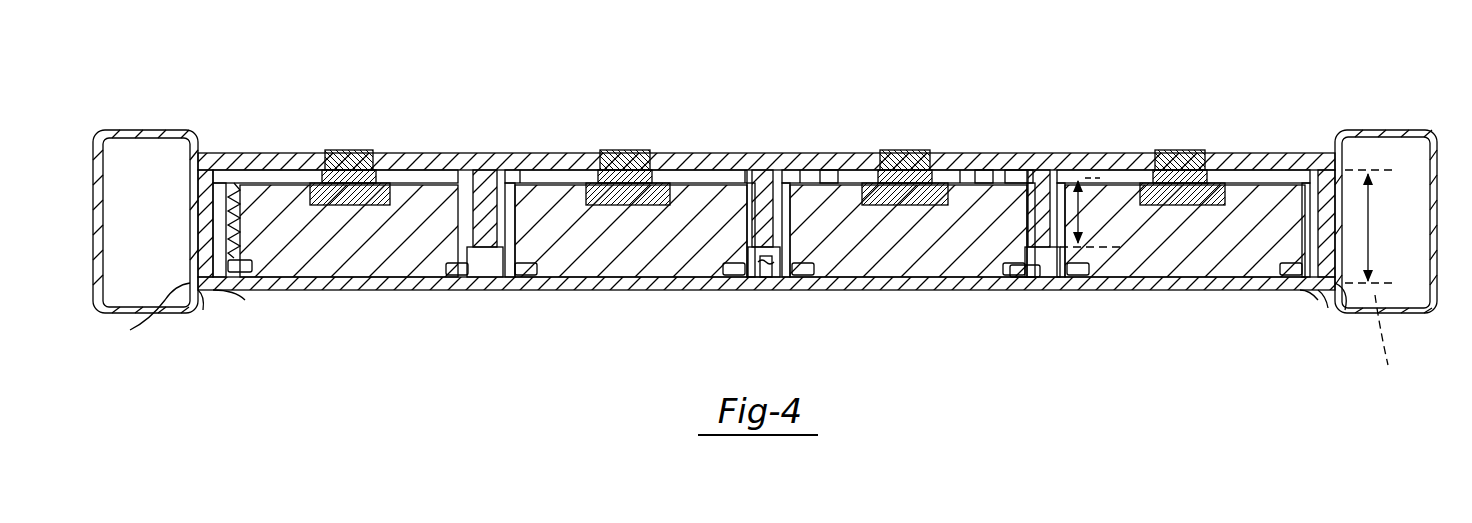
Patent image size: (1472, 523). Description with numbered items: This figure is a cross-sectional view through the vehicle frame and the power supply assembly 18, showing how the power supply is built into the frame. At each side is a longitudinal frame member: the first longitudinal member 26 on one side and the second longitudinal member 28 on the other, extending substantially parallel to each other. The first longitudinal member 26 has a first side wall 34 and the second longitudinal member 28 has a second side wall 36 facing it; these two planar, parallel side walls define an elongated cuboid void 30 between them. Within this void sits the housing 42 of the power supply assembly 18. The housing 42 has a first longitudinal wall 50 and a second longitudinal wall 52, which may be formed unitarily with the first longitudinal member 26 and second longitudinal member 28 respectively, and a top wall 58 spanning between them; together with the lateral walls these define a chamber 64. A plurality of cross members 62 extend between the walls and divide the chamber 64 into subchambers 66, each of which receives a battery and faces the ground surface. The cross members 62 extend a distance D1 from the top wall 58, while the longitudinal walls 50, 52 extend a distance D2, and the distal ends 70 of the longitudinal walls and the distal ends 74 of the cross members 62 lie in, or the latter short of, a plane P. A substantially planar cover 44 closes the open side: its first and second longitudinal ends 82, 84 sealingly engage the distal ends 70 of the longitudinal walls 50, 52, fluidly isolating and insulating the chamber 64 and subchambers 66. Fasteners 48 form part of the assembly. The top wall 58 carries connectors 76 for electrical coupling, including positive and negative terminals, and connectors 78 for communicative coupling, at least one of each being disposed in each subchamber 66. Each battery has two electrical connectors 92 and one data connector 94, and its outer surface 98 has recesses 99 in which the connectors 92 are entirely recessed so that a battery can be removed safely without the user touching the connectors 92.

The power supply assembly 18 is at (332, 112).
The first longitudinal member 26 is at (87, 160).
The second longitudinal member 28 is at (1447, 160).
The void 30 is at (330, 287).
The first side wall 34 is at (204, 300).
The second side wall 36 is at (1326, 300).
The housing 42 is at (1062, 172).
The cover 44 is at (1032, 292).
The fastener 48 is at (237, 160).
The first longitudinal wall 50 is at (205, 155).
The second longitudinal wall 52 is at (1326, 165).
The top wall 58 is at (500, 190).
The cross member 62 is at (490, 250).
The chamber 64 is at (766, 268).
The subchamber 66 is at (764, 170).
The distal end 70 is at (230, 293).
The distal end 74 is at (1045, 250).
The connector 76 is at (563, 173).
The connector 78 is at (628, 150).
The first longitudinal end 82 is at (130, 330).
The second longitudinal end 84 is at (1345, 300).
The electrical connector 92 is at (833, 170).
The data connector 94 is at (902, 152).
The outer surface 98 is at (1018, 170).
The recess 99 is at (812, 170).
The distance D1 is at (1082, 185).
The distance D2 is at (1370, 228).
The plane P is at (1386, 346).